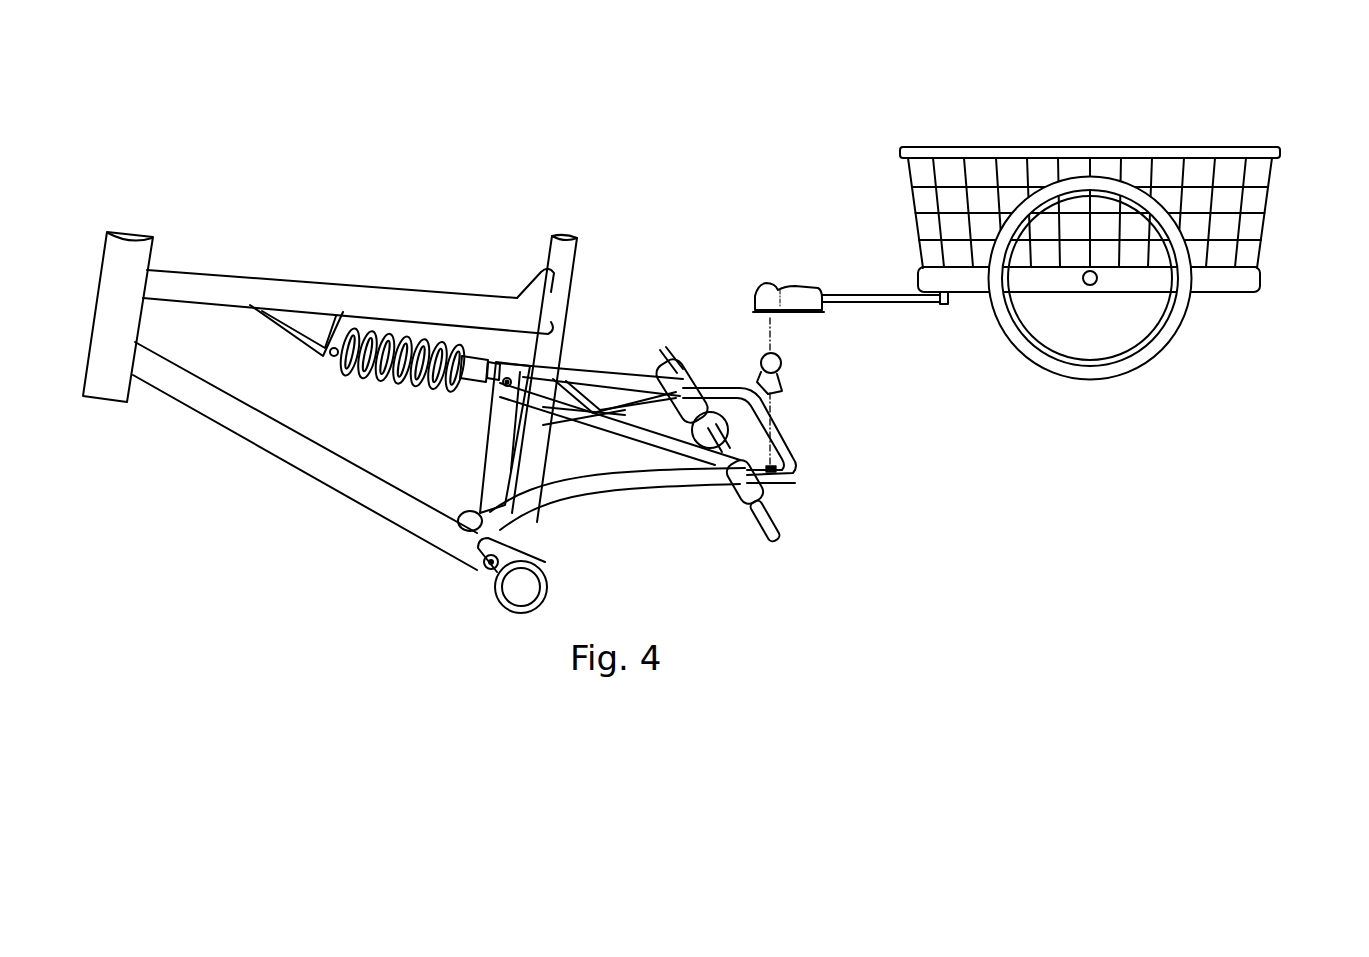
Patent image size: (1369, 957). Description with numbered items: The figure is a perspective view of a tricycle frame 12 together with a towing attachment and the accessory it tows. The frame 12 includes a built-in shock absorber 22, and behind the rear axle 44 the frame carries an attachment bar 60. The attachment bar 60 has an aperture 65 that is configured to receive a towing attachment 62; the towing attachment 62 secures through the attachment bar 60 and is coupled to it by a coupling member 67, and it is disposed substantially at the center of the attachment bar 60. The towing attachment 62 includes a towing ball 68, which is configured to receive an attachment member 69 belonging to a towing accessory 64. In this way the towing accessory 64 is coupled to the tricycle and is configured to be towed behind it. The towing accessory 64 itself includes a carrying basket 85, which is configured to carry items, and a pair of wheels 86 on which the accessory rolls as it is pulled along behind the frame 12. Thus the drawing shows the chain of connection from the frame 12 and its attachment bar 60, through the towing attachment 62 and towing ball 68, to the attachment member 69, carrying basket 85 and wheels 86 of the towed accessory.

The tricycle frame 12 is at (214, 166).
The shock absorber 22 is at (396, 398).
The rear axle 44 is at (775, 541).
The attachment bar 60 is at (805, 470).
The towing attachment 62 is at (770, 368).
The towing accessory 64 is at (1077, 232).
The aperture 65 is at (783, 426).
The coupling member 67 is at (768, 463).
The towing ball 68 is at (784, 360).
The attachment member 69 is at (786, 281).
The carrying basket 85 is at (1266, 213).
The wheels 86 is at (1162, 352).